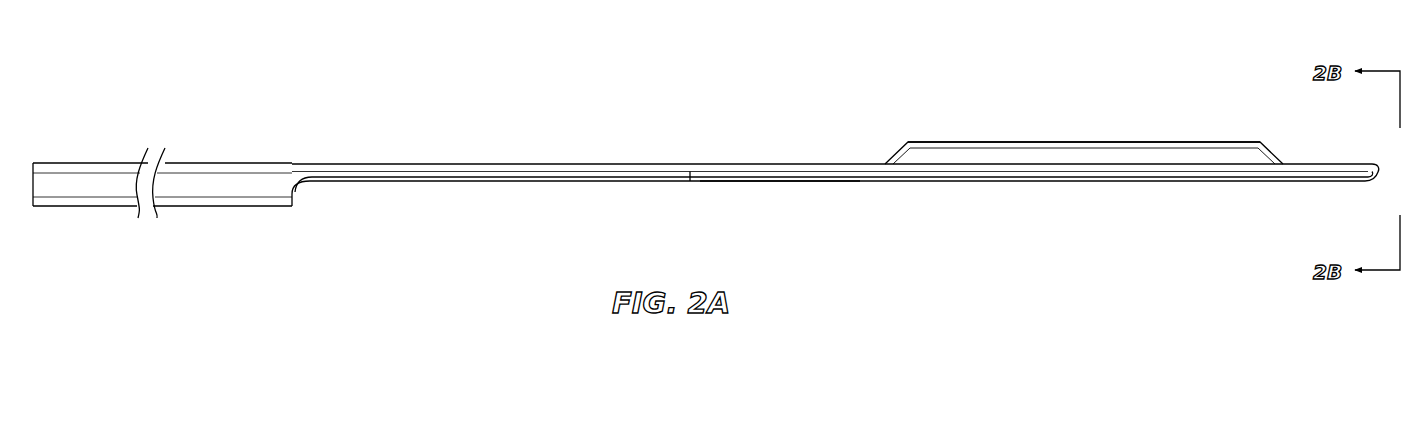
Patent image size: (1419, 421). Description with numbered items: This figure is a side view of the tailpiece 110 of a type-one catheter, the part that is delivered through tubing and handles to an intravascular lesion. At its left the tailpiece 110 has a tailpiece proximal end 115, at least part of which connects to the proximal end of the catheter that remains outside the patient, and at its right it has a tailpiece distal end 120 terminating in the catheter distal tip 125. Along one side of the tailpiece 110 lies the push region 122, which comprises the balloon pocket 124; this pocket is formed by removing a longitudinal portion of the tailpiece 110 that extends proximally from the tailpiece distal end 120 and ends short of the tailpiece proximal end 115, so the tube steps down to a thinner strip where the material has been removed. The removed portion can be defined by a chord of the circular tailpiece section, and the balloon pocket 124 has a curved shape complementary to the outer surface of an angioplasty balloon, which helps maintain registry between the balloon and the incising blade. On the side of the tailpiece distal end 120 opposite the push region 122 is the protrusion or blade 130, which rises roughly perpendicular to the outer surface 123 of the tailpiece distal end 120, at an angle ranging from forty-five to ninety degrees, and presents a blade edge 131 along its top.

The tailpiece 110 is at (333, 103).
The tailpiece proximal end 115 is at (212, 216).
The tailpiece distal end 120 is at (856, 189).
The push region 122 is at (499, 186).
The outer surface 123 is at (716, 159).
The balloon pocket 124 is at (780, 189).
The catheter distal tip 125 is at (1388, 177).
The protrusion or blade 130 is at (997, 137).
The blade edge 131 is at (1150, 143).